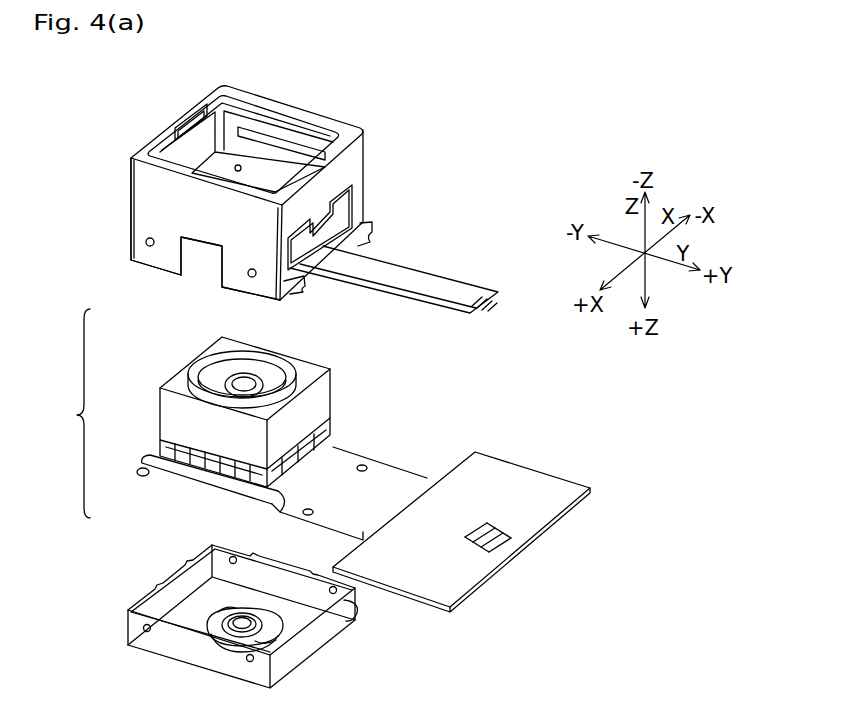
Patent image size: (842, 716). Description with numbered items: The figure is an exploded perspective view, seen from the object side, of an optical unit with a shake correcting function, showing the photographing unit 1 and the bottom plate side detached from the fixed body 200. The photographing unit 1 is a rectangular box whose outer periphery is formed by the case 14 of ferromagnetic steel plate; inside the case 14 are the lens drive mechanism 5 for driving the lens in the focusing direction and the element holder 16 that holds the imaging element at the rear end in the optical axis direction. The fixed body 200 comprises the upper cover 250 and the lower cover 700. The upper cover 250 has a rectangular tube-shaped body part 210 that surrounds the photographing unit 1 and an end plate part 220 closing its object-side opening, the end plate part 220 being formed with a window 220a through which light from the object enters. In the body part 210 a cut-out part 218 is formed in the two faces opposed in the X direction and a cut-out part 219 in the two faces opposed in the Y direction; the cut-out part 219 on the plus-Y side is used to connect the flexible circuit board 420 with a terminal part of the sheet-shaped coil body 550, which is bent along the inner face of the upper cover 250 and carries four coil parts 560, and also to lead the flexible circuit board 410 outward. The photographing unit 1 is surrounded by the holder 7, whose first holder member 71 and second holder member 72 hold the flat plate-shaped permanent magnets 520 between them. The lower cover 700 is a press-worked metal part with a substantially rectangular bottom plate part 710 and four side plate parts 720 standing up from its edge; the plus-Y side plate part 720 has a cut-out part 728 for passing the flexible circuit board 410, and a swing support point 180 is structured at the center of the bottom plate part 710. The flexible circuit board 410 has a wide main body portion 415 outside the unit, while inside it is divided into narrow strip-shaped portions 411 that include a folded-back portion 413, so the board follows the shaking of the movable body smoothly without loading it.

The photographing unit 1 is at (274, 394).
The lens drive mechanism 5 is at (278, 348).
The holder 7 is at (190, 163).
The case 14 is at (325, 393).
The element holder 16 is at (333, 428).
The first holder member 71 is at (213, 148).
The second holder member 72 is at (215, 152).
The swing support point 180 is at (251, 606).
The fixed body 200 is at (62, 413).
The rectangular tube-shaped body part 210 is at (243, 201).
The cut-out part 218 is at (222, 272).
The cut-out part 219 is at (355, 200).
The end plate part 220 is at (278, 135).
The window 220a is at (262, 105).
The upper cover 250 is at (145, 258).
The flexible circuit board 410 is at (471, 513).
The strip-shaped portion 411 is at (264, 477).
The folded-back portion 413 is at (148, 469).
The main body portion 415 is at (462, 485).
The flexible circuit board 420 is at (432, 270).
The permanent magnet 520 is at (210, 130).
The sheet-shaped coil body 550 is at (497, 715).
The coil part 560 is at (526, 706).
The lower cover 700 is at (252, 606).
The bottom plate part 710 is at (305, 633).
The side plate part 720 is at (195, 645).
The cut-out part 728 is at (352, 624).